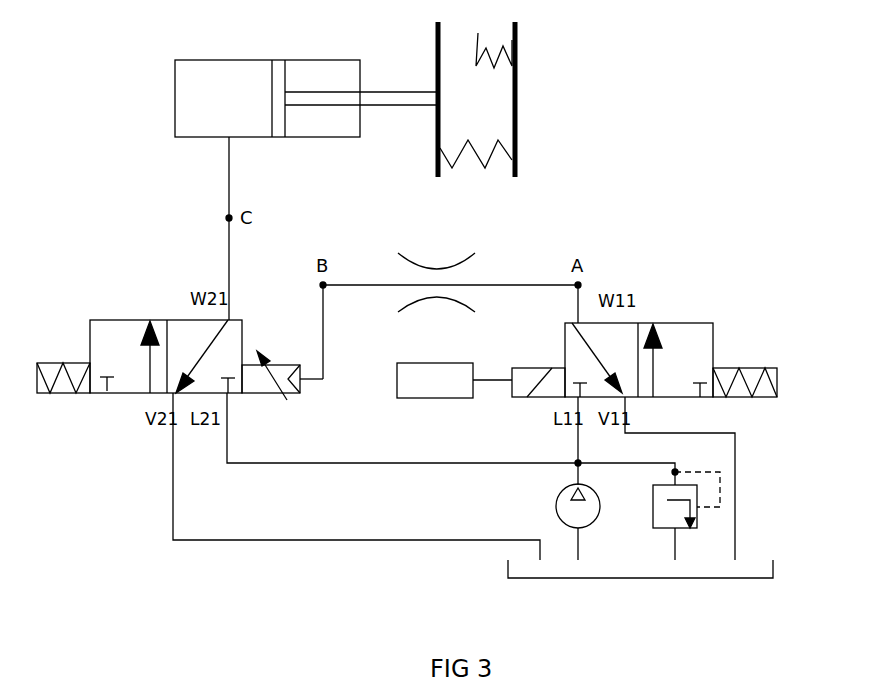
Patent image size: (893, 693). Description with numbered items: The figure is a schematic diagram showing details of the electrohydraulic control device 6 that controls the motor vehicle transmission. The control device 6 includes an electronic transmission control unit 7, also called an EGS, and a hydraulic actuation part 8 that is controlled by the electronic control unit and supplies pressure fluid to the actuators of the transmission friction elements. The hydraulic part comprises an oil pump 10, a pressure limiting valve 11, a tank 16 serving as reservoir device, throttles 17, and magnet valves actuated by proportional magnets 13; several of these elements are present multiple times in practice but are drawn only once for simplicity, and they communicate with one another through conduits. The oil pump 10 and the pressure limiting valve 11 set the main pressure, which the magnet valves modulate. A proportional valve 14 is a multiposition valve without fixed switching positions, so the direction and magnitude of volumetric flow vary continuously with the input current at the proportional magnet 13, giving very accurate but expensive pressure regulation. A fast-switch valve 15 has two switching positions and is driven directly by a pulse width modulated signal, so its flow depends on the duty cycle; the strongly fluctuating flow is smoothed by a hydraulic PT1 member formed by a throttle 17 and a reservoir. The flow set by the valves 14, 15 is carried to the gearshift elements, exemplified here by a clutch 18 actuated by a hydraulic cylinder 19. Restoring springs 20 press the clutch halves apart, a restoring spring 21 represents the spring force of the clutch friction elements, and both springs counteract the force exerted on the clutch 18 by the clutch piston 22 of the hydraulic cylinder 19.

The electrohydraulic control device 6 is at (657, 108).
The electronic transmission control unit 7 is at (413, 401).
The hydraulic actuation part 8 is at (155, 491).
The oil pump 10 is at (583, 521).
The pressure limiting valve 11 is at (686, 521).
The proportional magnet 13 is at (267, 396).
The proportional valve 14 is at (110, 323).
The fast-switch valve 15 is at (713, 352).
The tank 16 is at (727, 580).
The throttle 17 is at (436, 273).
The clutch 18 is at (452, 75).
The hydraulic cylinder 19 is at (327, 127).
The restoring spring 20 is at (490, 165).
The restoring spring 21 is at (485, 55).
The clutch piston 22 is at (284, 77).